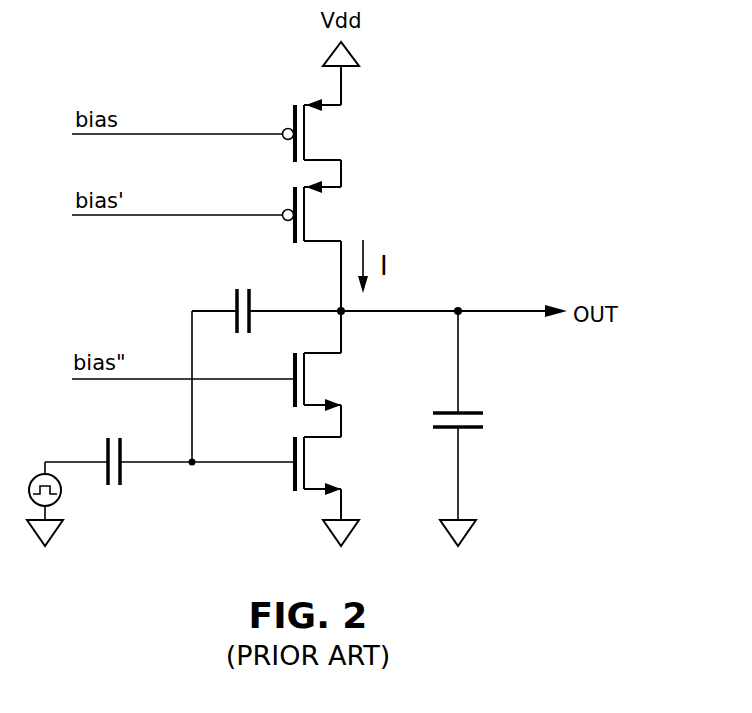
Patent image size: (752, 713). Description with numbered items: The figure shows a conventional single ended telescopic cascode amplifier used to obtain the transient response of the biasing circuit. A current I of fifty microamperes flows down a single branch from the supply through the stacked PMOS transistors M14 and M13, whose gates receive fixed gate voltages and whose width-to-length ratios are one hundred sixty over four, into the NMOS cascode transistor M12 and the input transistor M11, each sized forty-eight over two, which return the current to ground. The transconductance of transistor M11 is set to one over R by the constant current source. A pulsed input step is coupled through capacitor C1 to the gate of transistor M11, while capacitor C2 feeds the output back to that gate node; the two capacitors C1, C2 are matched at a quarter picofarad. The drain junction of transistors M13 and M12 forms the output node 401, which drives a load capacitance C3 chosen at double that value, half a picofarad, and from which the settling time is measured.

The output node 401 is at (505, 311).
The transistor M14 is at (331, 130).
The transistor M13 is at (331, 212).
The transistor M12 is at (336, 382).
The transistor M11 is at (336, 466).
The capacitor C1 is at (113, 444).
The capacitor C2 is at (241, 291).
The load capacitance C3 is at (466, 415).